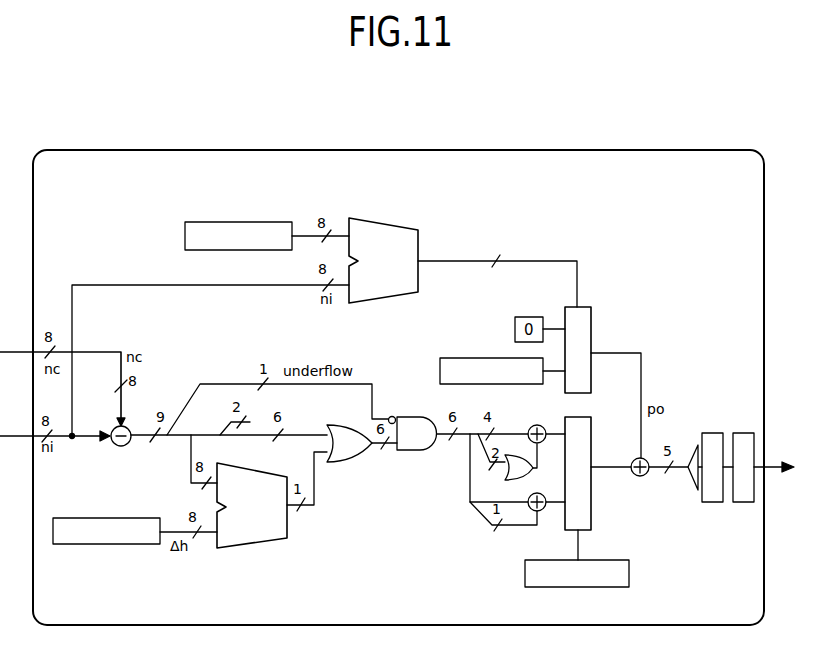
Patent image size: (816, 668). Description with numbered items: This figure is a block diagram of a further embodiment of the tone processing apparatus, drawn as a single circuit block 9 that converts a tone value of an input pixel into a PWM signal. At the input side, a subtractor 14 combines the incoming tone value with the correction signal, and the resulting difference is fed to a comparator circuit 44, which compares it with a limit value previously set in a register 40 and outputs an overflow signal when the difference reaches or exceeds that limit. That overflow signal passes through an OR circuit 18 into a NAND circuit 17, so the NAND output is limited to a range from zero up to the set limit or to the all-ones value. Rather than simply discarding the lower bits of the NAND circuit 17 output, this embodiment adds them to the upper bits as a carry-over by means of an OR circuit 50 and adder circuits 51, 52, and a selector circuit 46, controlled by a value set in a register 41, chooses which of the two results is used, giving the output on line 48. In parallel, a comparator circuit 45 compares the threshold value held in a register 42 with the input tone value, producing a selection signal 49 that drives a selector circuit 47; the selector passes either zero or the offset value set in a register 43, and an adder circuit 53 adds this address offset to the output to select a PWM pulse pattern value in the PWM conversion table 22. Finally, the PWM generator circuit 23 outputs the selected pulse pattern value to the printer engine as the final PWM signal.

The correction circuit block 9 is at (480, 150).
The subtractor 14 is at (121, 447).
The NAND circuit 17 is at (410, 450).
The OR gate 18 is at (345, 462).
The PWM conversion table 22 is at (708, 432).
The PWM generator circuit 23 is at (742, 432).
The register 40 is at (125, 544).
The register 41 is at (525, 574).
The register 42 is at (258, 220).
The register 43 is at (475, 356).
The comparator circuit 44 is at (252, 548).
The comparator circuit 45 is at (392, 218).
The selector circuit 46 is at (592, 432).
The selector circuit 47 is at (580, 307).
The output line p 48 is at (614, 467).
The selection signal 49 is at (557, 260).
The OR circuit 50 is at (516, 478).
The adder circuit 51 is at (529, 424).
The adder circuit 52 is at (542, 511).
The adder circuit 53 is at (645, 475).